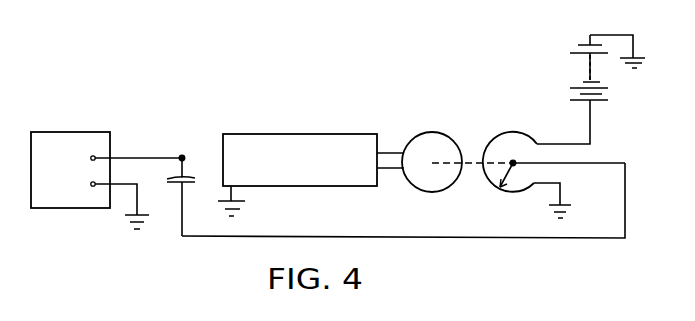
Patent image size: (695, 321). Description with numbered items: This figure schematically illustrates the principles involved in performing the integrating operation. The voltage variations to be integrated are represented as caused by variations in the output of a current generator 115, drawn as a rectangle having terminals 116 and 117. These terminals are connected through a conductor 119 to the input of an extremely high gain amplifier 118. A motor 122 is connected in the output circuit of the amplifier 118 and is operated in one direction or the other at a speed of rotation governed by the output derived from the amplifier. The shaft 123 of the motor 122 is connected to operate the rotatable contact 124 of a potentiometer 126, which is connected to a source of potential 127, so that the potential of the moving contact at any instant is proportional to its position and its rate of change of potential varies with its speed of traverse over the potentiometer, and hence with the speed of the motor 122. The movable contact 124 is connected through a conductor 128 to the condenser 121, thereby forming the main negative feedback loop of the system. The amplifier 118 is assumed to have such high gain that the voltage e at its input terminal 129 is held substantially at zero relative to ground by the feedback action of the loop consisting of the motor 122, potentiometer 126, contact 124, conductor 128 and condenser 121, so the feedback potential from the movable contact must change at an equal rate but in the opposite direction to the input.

The current generator 115 is at (52, 132).
The terminal 116 is at (95, 156).
The terminal 117 is at (92, 186).
The amplifier 118 is at (346, 134).
The conductor 119 is at (151, 156).
The condenser 121 is at (195, 183).
The motor 122 is at (446, 120).
The shaft 123 is at (471, 166).
The rotatable contact 124 is at (498, 190).
The potentiometer 126 is at (529, 135).
The source of potential 127 is at (583, 82).
The conductor 128 is at (435, 240).
The terminal 129 is at (182, 157).